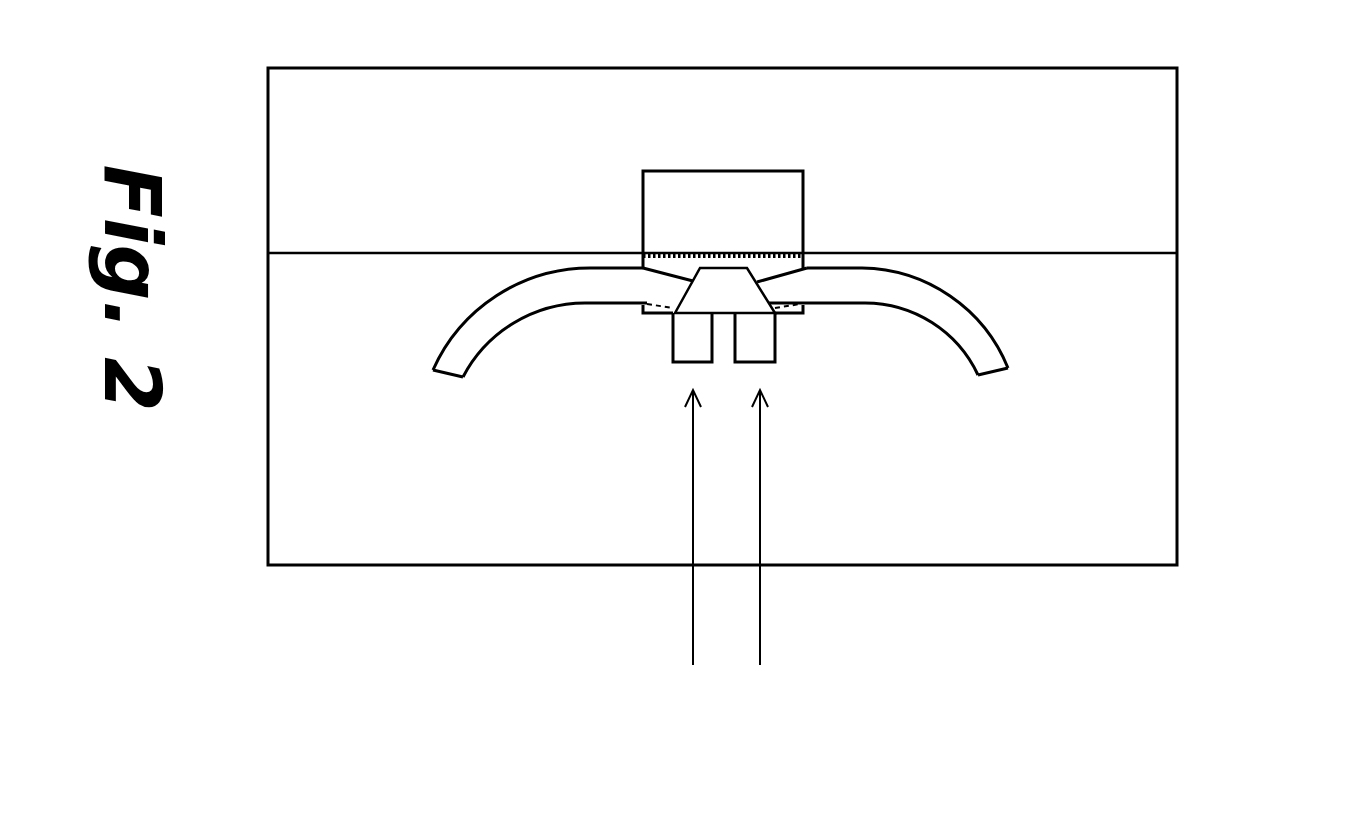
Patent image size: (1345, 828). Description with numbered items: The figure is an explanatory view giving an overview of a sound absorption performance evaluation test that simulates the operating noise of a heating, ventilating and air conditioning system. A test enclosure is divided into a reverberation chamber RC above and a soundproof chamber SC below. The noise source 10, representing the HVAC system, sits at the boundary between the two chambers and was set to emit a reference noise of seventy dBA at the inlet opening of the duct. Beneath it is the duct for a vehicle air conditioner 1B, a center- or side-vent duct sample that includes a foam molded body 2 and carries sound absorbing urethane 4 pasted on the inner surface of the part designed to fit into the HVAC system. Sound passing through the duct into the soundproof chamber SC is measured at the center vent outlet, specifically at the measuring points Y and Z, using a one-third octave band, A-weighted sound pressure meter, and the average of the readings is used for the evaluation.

The noise source 10 is at (797, 188).
The sound absorbing urethane 4 is at (808, 260).
The duct for a vehicle air conditioner 1B is at (982, 308).
The foam molded body 2 is at (672, 350).
The reverberation chamber RC is at (1173, 165).
The soundproof chamber SC is at (1170, 375).
The measuring point Y is at (686, 551).
The measuring point Z is at (755, 551).